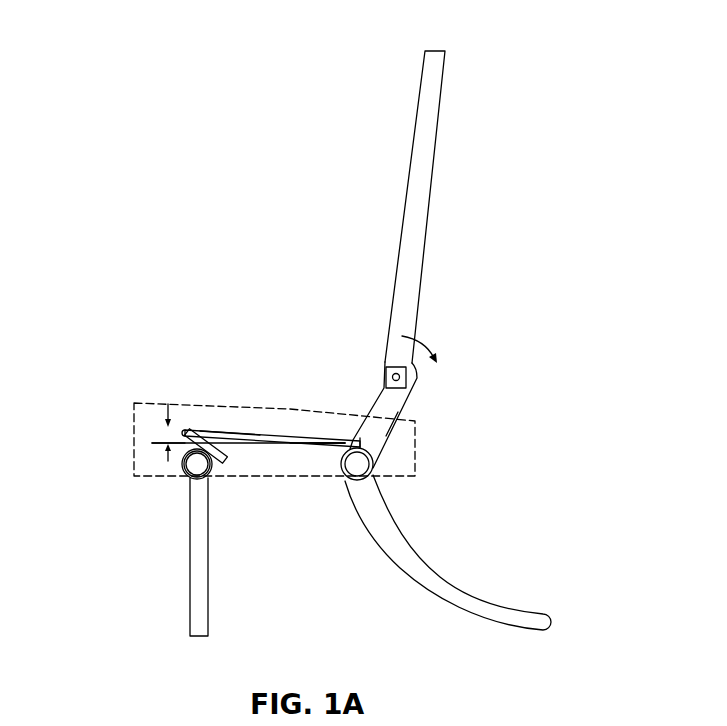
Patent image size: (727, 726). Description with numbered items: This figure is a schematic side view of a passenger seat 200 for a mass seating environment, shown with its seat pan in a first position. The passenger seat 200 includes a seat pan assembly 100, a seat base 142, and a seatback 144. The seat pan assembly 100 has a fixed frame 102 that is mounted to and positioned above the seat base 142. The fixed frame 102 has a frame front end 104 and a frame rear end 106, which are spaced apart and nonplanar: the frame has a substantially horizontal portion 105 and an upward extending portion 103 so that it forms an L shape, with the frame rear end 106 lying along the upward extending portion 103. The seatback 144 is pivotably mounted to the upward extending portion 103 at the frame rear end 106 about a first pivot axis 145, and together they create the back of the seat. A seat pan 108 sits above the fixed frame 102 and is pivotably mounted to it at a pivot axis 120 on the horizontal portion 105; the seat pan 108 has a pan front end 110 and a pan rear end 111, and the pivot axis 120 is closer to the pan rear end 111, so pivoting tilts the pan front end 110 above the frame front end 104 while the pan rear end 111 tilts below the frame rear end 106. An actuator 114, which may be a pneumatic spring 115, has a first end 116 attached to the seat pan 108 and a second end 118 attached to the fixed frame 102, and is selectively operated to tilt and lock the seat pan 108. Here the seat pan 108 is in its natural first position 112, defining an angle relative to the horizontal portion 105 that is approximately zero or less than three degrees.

The passenger seat 200 is at (494, 76).
The seat pan assembly 100 is at (141, 400).
The seatback 144 is at (428, 191).
The first pivot axis 145 is at (405, 335).
The upward extending portion 103 is at (405, 402).
The pan rear end 111 is at (379, 437).
The fixed frame 102 is at (396, 441).
The frame rear end 106 is at (375, 463).
The seat base 142 is at (427, 573).
The pivot axis 120 is at (323, 444).
The substantially horizontal portion 105 is at (303, 453).
The frame front end 104 is at (243, 443).
The seat pan 108 is at (257, 431).
The first position 112 is at (208, 428).
The first end 116 is at (188, 428).
The pan front end 110 is at (185, 432).
The second end 118 is at (230, 460).
The actuator 114 is at (207, 450).
The pneumatic spring 115 is at (208, 480).